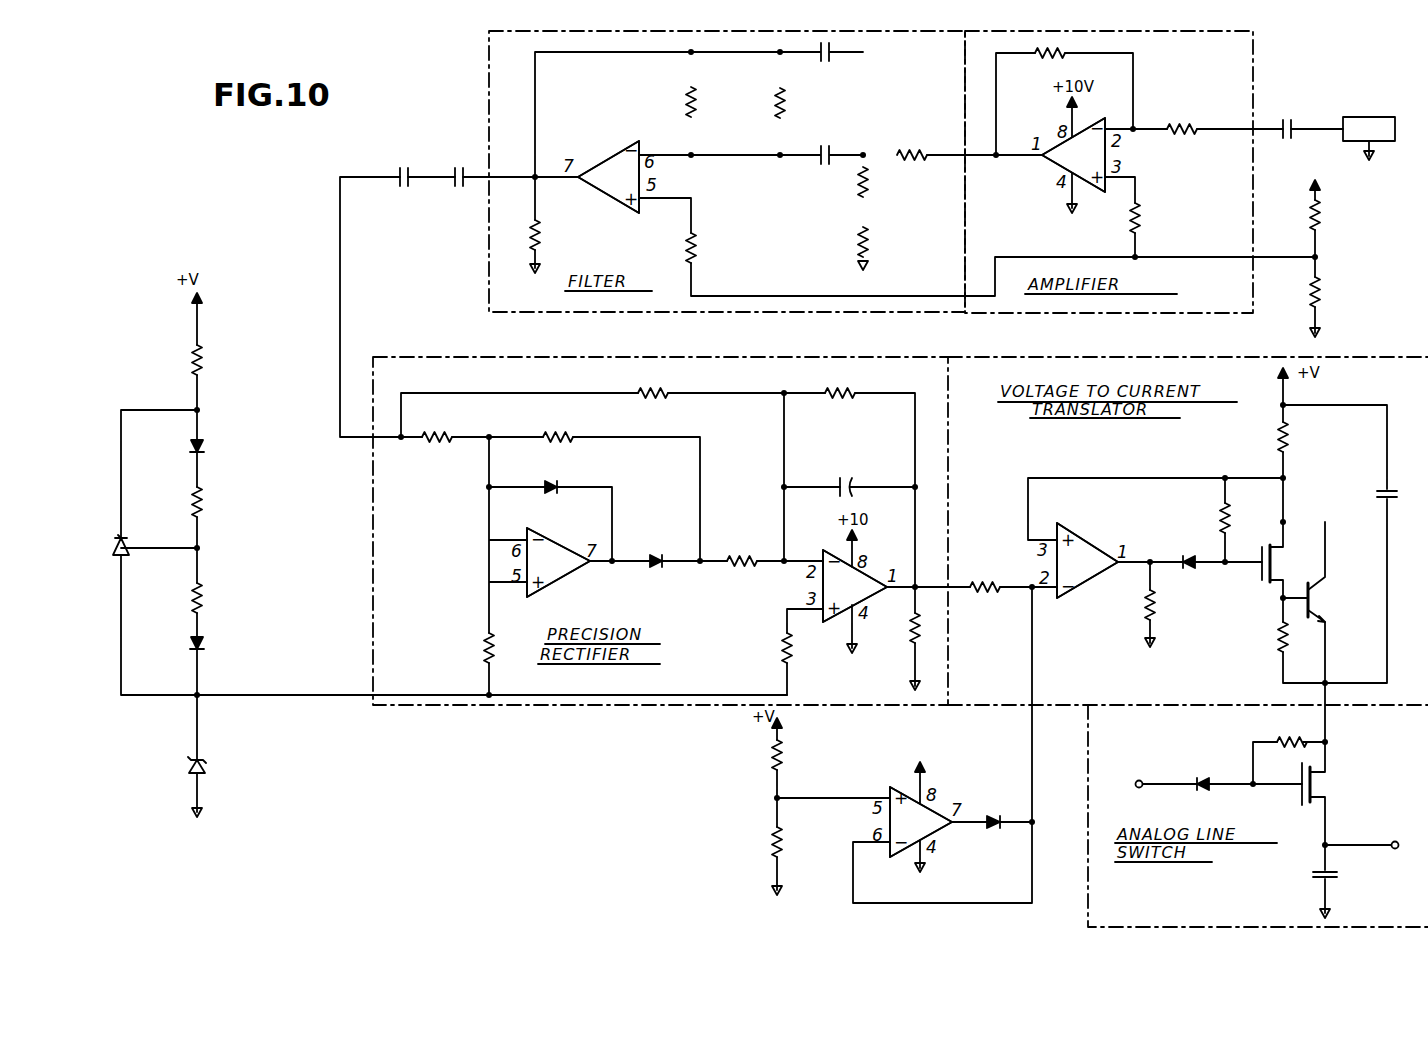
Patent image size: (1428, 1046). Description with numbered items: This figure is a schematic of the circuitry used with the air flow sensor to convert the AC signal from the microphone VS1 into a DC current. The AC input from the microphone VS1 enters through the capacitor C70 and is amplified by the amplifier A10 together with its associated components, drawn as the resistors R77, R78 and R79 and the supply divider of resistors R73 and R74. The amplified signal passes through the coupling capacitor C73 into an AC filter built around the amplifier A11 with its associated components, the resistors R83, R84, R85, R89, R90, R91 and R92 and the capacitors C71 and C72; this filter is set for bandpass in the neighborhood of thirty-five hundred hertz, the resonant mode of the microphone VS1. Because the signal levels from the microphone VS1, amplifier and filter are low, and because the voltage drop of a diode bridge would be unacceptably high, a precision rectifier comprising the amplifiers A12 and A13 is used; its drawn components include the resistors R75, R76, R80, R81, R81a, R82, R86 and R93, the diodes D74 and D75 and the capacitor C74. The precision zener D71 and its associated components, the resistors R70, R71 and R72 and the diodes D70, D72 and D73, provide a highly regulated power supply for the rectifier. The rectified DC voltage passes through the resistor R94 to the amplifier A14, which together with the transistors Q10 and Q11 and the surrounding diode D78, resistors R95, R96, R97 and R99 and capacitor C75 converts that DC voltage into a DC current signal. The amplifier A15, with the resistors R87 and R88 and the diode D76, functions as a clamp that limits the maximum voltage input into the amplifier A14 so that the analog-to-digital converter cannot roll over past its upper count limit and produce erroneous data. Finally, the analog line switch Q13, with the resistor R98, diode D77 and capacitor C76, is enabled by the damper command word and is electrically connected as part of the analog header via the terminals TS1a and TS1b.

The capacitor C73 is at (427, 168).
The filter amplifier A11 is at (616, 152).
The resistor R92 is at (541, 229).
The resistor R90 is at (686, 99).
The resistor R89 is at (777, 111).
The capacitor C72 is at (828, 62).
The capacitor C71 is at (821, 162).
The resistor R83 is at (915, 151).
The resistor R84 is at (868, 182).
The resistor R85 is at (858, 241).
The resistor R91 is at (696, 249).
The amplifier A10 is at (1050, 172).
The resistor R78 is at (1046, 58).
The resistor R77 is at (1184, 135).
The capacitor C70 is at (1291, 116).
The microphone VS1 is at (1386, 116).
The resistor R79 is at (1144, 220).
The resistor R73 is at (1322, 211).
The resistor R74 is at (1323, 297).
The resistor R72 is at (191, 363).
The diode D73 is at (205, 447).
The resistor R71 is at (204, 501).
The precision zener D71 is at (113, 556).
The resistor R70 is at (204, 599).
The diode D72 is at (204, 646).
The diode D70 is at (190, 767).
The resistor R76 is at (433, 444).
The resistor R81 is at (646, 391).
The resistor R80 is at (566, 432).
The diode D74 is at (556, 484).
The precision rectifier amplifier A12 is at (558, 554).
The diode D75 is at (657, 553).
The resistor R82 is at (741, 555).
The capacitor C74 is at (840, 481).
The resistor R81a is at (838, 399).
The resistor R75 is at (486, 649).
The precision rectifier amplifier A13 is at (871, 566).
The resistor R86 is at (784, 649).
The resistor R93 is at (912, 636).
The resistor R94 is at (986, 597).
The amplifier A14 is at (1086, 536).
The diode D78 is at (1181, 556).
The resistor R95 is at (1145, 611).
The resistor R96 is at (1231, 516).
The resistor R99 is at (1276, 436).
The capacitor C75 is at (1380, 493).
The transistor Q10 is at (1287, 560).
The transistor Q11 is at (1319, 601).
The resistor R97 is at (1278, 643).
The resistor R98 is at (1286, 738).
The analog header terminal TS1a is at (1139, 780).
The diode D77 is at (1203, 792).
The analog line switch Q13 is at (1320, 788).
The analog header terminal TS1b is at (1410, 836).
The capacitor C76 is at (1314, 877).
The resistor R87 is at (771, 760).
The resistor R88 is at (771, 843).
The clamp amplifier A15 is at (904, 804).
The diode D76 is at (994, 833).